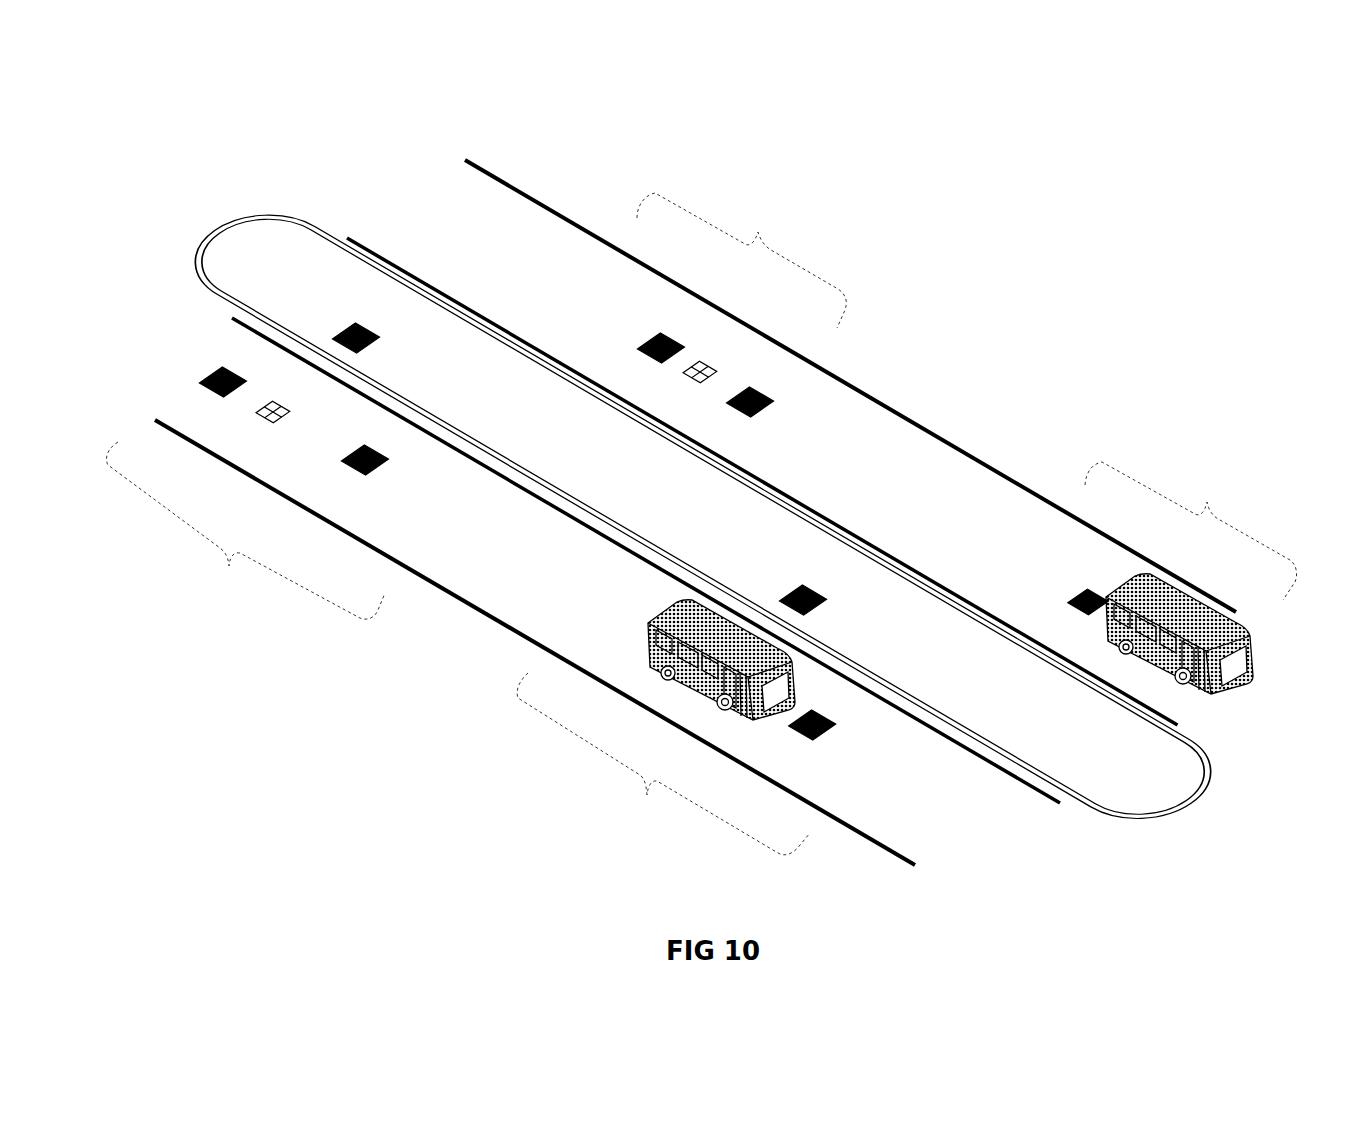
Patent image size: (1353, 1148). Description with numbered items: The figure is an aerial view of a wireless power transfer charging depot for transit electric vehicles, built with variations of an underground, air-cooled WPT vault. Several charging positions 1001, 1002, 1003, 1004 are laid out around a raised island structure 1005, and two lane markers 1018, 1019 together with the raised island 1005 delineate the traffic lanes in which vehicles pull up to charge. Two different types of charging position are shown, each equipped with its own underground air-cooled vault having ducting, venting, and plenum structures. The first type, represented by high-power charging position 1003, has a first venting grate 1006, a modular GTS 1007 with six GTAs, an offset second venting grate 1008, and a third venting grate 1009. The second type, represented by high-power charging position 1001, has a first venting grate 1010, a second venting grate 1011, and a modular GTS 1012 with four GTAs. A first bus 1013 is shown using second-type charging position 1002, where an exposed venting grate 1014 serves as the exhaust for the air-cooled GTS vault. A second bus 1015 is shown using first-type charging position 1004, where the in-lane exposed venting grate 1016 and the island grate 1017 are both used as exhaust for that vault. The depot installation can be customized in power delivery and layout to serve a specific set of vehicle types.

The charging position 1001 is at (741, 260).
The charging position 1002 is at (1191, 531).
The charging position 1003 is at (245, 530).
The charging position 1004 is at (663, 764).
The raised island structure 1005 is at (228, 256).
The first venting grate 1006 is at (243, 372).
The modular GTS 1007 is at (288, 392).
The second venting grate 1008 is at (367, 315).
The third venting grate 1009 is at (378, 437).
The first venting grate 1010 is at (633, 343).
The second venting grate 1011 is at (775, 415).
The modular GTS 1012 is at (725, 373).
The first bus 1013 is at (1240, 693).
The exposed venting grate 1014 is at (1067, 595).
The second bus 1015 is at (625, 643).
The in-lane exposed venting grate 1016 is at (818, 743).
The island grate 1017 is at (805, 582).
The lane marker 1018 is at (1003, 463).
The lane marker 1019 is at (920, 864).